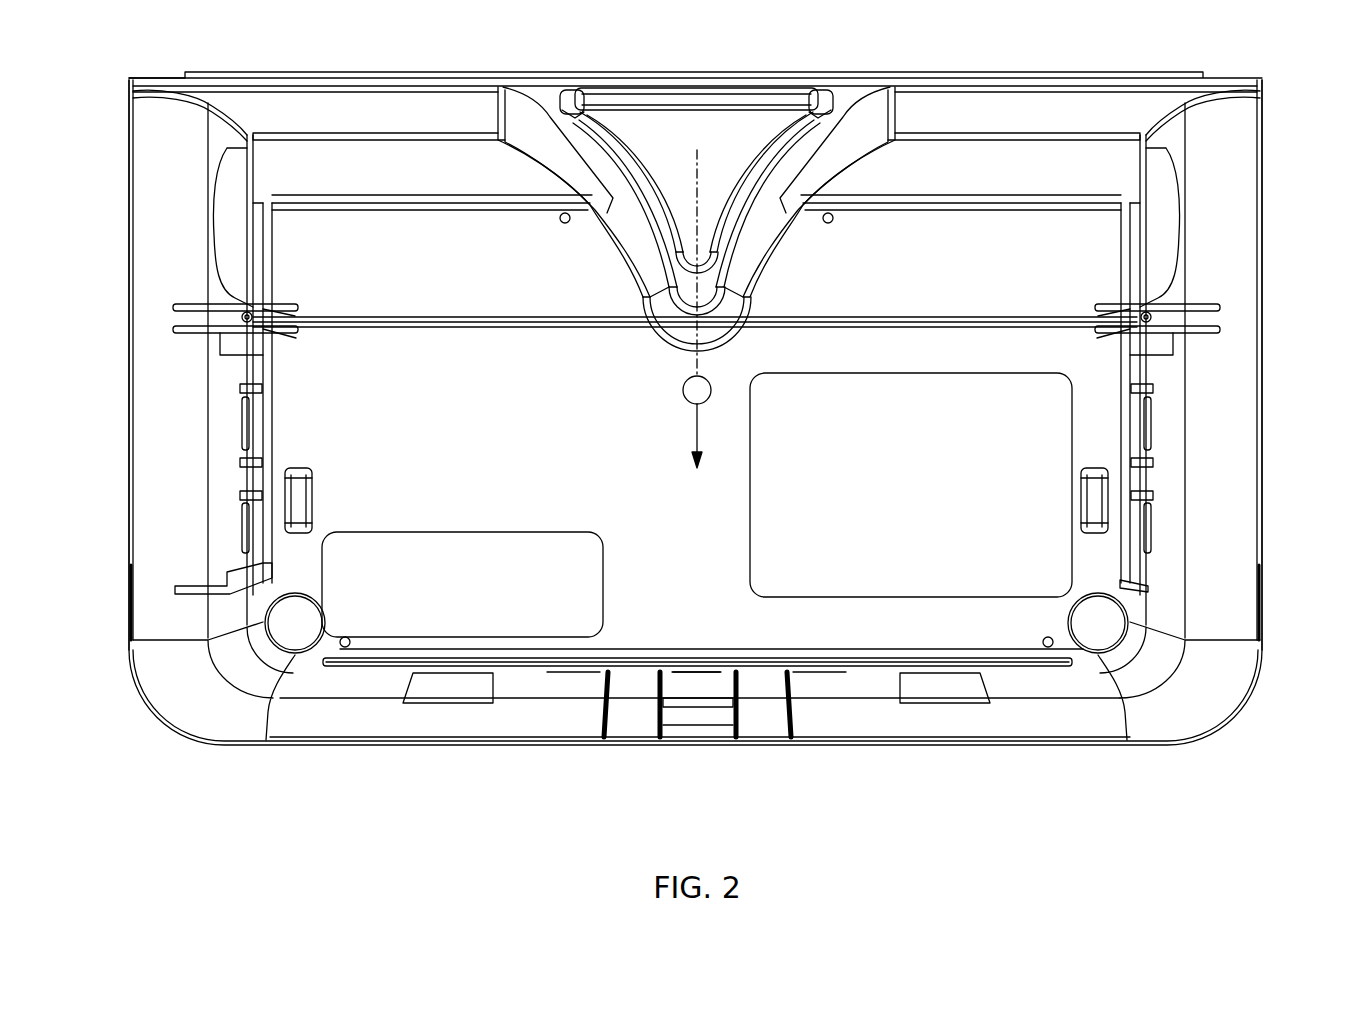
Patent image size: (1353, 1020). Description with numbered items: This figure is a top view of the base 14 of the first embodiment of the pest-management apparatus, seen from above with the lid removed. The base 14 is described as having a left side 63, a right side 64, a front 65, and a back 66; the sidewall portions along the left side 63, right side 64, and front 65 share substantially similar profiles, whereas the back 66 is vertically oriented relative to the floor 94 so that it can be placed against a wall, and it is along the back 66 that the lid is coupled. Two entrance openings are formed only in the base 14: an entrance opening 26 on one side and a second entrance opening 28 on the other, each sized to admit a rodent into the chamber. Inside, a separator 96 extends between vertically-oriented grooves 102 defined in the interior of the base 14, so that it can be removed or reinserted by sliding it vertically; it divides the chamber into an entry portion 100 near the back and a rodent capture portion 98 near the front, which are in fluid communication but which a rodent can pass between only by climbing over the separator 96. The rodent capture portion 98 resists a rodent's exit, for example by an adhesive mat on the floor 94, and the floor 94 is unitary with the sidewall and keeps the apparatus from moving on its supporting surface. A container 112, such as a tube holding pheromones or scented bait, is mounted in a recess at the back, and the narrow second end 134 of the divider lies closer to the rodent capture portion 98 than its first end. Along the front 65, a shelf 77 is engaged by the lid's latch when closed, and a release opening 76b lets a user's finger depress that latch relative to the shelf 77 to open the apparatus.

The base 14 is at (508, 750).
The entrance opening 26 is at (1176, 197).
The second entrance opening 28 is at (218, 220).
The left side 63 is at (128, 412).
The right side 64 is at (1266, 410).
The front 65 is at (805, 745).
The back 66 is at (683, 69).
The release opening 76b is at (707, 712).
The shelf 77 is at (677, 720).
The floor 94 is at (988, 632).
The separator 96 is at (570, 333).
The rodent capture portion 98 is at (486, 424).
The entry portion 100 is at (448, 268).
The vertically-oriented grooves 102 is at (245, 318).
The container 112 is at (757, 104).
The second end 134 is at (690, 418).